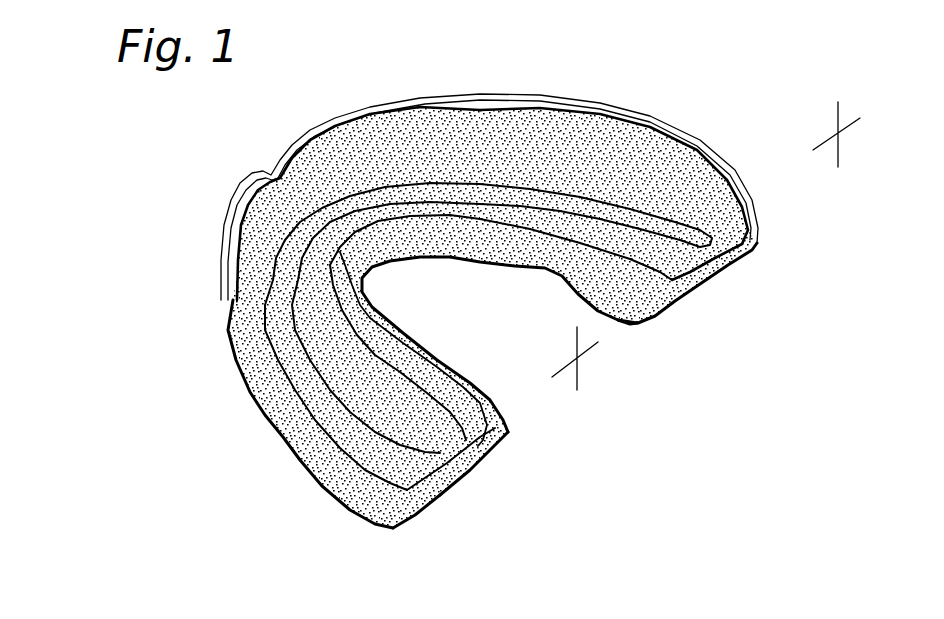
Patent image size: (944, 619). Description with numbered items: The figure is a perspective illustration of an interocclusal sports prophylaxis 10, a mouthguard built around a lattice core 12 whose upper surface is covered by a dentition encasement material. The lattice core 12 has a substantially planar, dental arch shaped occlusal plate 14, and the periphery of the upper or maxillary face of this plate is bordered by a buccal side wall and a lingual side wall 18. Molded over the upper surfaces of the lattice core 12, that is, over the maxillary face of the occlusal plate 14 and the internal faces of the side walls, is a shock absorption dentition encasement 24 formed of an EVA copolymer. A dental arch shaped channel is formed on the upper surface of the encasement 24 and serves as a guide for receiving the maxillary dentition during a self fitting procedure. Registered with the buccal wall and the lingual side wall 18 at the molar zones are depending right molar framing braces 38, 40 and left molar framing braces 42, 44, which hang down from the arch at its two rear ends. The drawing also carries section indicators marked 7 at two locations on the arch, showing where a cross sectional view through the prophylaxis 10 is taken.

The interocclusal sports prophylaxis 10 is at (446, 306).
The lattice core 12 is at (313, 415).
The occlusal plate 14 is at (447, 480).
The lingual side wall 18 is at (463, 240).
The shock absorption dentition encasement 24 is at (497, 156).
The right molar framing brace 38 is at (757, 245).
The right molar framing brace 40 is at (632, 325).
The left molar framing brace 42 is at (347, 500).
The left molar framing brace 44 is at (510, 443).
The section line 7- 7 is at (837, 133).